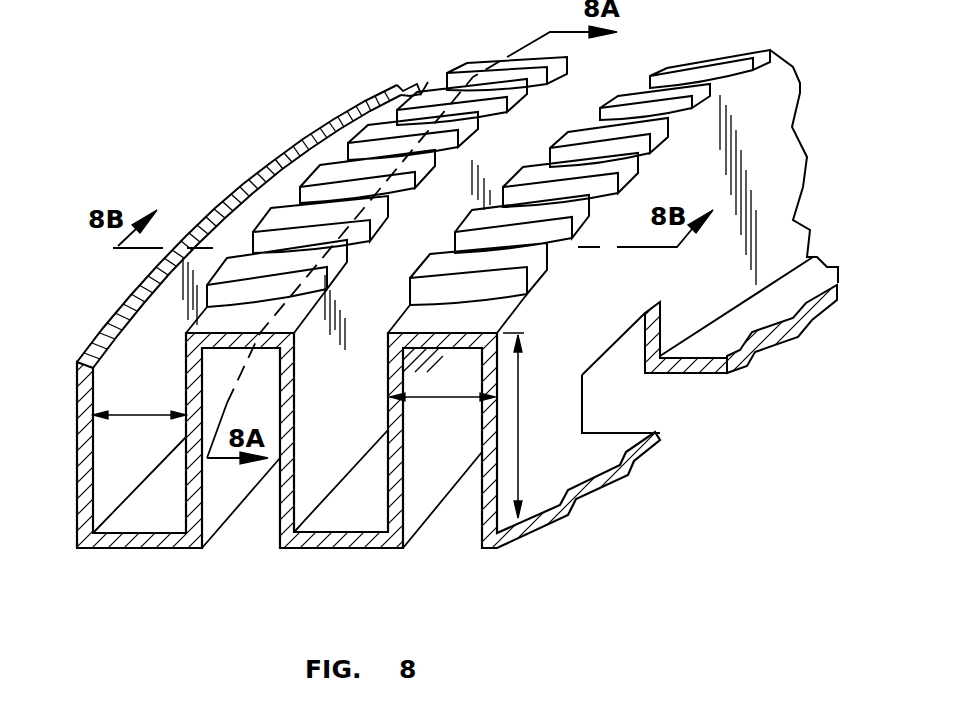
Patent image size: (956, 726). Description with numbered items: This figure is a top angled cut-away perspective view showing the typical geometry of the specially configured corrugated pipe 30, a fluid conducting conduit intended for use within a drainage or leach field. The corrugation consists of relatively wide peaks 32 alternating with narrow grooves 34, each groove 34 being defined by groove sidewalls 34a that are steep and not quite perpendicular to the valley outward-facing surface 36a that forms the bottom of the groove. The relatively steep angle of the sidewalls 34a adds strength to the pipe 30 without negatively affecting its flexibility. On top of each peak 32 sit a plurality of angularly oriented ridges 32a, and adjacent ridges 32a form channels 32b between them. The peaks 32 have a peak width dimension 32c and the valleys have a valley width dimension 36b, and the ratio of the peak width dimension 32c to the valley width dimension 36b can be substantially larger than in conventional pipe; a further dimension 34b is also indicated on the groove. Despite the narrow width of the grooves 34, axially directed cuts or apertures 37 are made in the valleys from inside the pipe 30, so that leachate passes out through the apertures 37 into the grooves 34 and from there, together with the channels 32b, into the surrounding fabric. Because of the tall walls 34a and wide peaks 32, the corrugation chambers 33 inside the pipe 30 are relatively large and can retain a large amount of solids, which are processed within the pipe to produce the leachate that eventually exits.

The corrugated pipe 30 is at (247, 132).
The peak 32 is at (480, 62).
The ridge 32a is at (720, 52).
The channel 32b is at (738, 84).
The peak width dimension 32c is at (437, 398).
The corrugation chamber 33 is at (247, 518).
The groove 34 is at (137, 517).
The groove sidewall 34a is at (597, 110).
The channel height 34b is at (518, 427).
The valley outward-facing surface 36a is at (377, 517).
The valley width dimension 36b is at (140, 417).
The aperture 37 is at (647, 402).